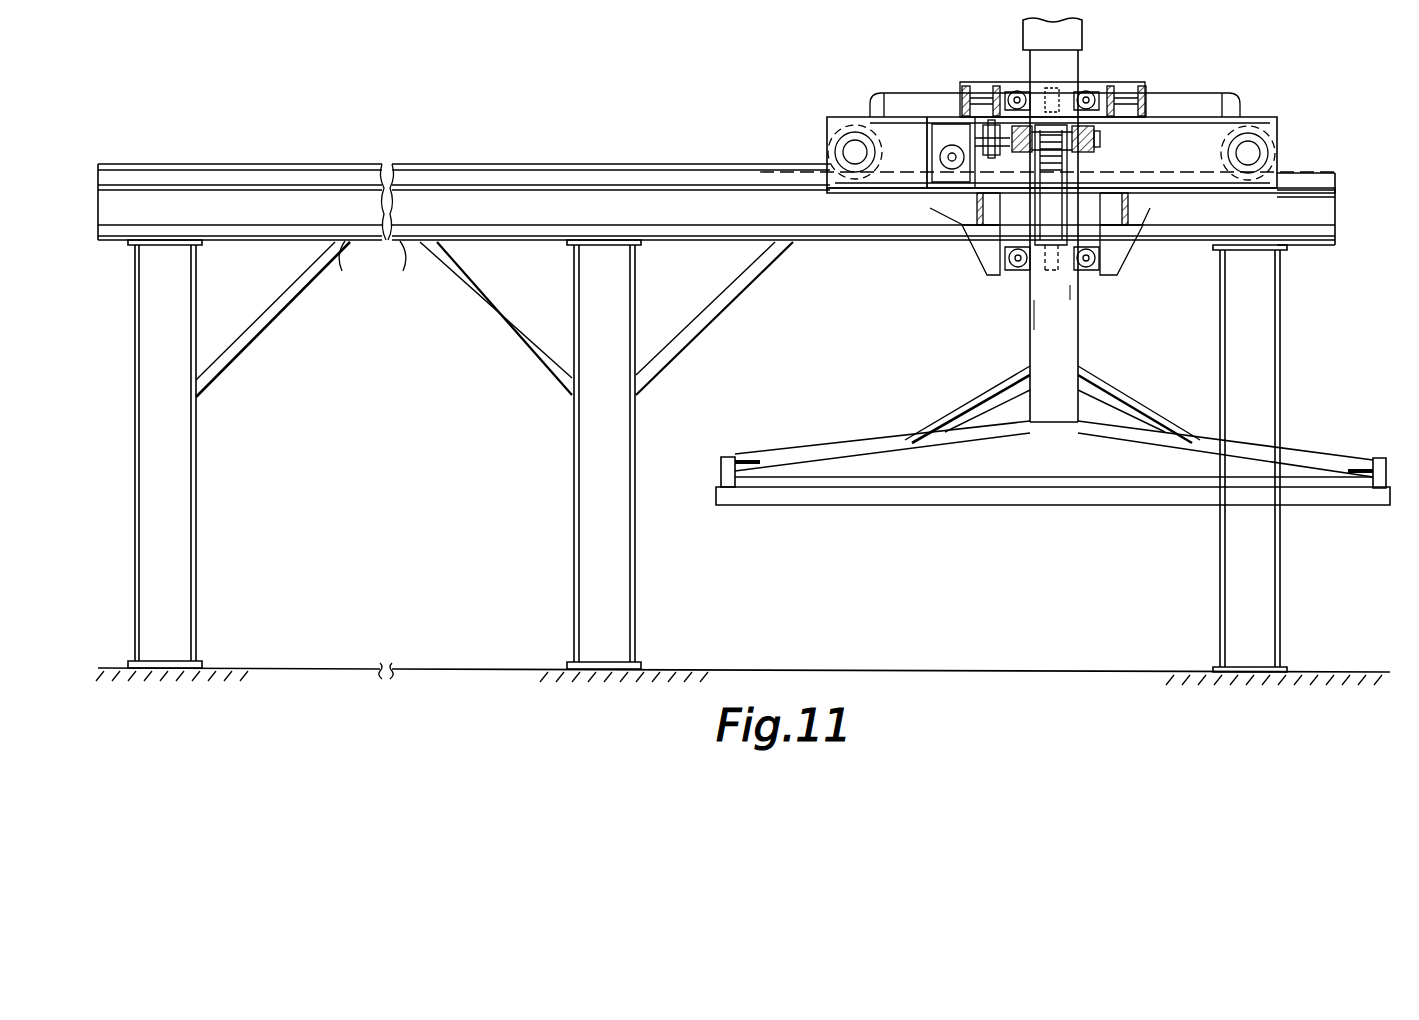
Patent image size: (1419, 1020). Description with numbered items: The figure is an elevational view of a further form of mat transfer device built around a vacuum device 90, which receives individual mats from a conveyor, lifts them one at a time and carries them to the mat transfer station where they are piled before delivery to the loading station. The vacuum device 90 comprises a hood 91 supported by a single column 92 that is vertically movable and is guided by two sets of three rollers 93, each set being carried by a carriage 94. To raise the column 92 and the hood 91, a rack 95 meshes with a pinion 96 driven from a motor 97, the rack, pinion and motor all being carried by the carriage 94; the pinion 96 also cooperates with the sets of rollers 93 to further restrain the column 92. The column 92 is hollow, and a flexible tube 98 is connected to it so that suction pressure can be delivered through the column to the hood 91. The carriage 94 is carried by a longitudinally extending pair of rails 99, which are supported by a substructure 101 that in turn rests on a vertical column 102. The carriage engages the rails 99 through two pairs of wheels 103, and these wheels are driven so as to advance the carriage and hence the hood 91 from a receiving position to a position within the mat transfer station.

The vacuum device 90 is at (1050, 176).
The hood 91 is at (853, 440).
The column 92 is at (1078, 347).
The rollers 93 is at (1084, 270).
The carriage 94 is at (924, 96).
The rack 95 is at (1054, 172).
The pinion 96 is at (1093, 122).
The motor 97 is at (943, 129).
The flexible tube 98 is at (1082, 33).
The rails 99 is at (612, 172).
The substructure 101 is at (406, 278).
The vertical column 102 is at (635, 438).
The wheels 103 is at (828, 150).